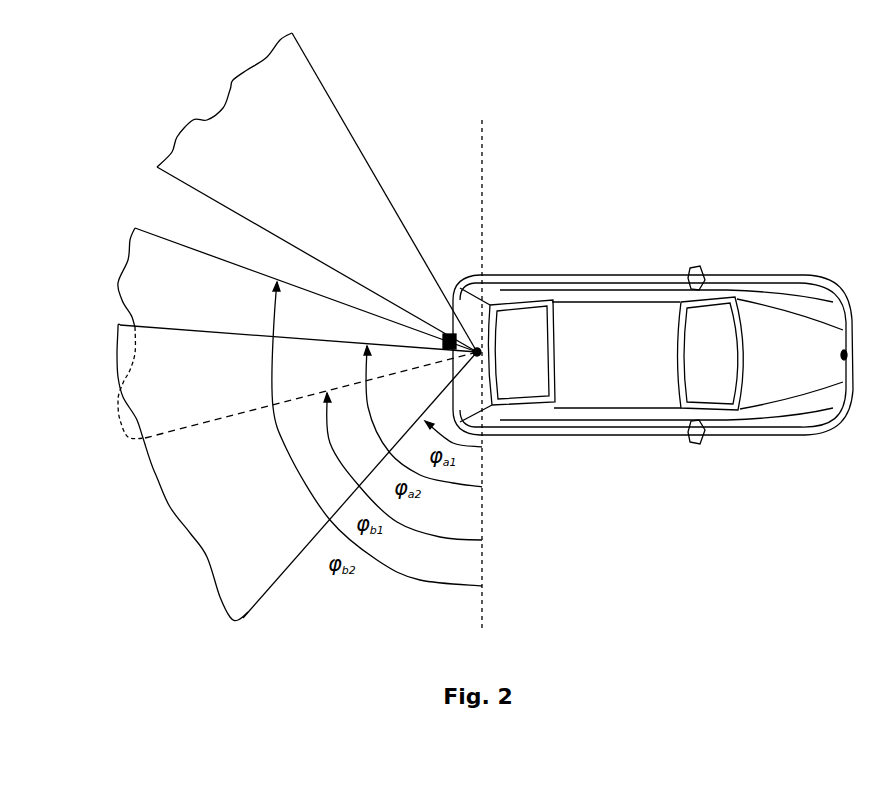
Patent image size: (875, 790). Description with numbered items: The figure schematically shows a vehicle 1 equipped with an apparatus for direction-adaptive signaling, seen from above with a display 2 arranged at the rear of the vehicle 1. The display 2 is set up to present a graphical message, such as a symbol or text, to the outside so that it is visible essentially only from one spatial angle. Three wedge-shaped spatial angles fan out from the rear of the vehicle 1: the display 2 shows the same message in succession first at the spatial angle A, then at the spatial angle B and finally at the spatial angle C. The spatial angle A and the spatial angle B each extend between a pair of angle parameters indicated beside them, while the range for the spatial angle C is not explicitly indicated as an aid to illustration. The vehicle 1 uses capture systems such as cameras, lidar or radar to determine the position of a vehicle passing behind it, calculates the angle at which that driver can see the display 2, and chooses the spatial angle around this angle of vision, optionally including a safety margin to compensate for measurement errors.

The vehicle 1 is at (675, 243).
The display 2 is at (455, 300).
The spatial angle A is at (297, 472).
The spatial angle B is at (297, 333).
The spatial angle C is at (317, 192).